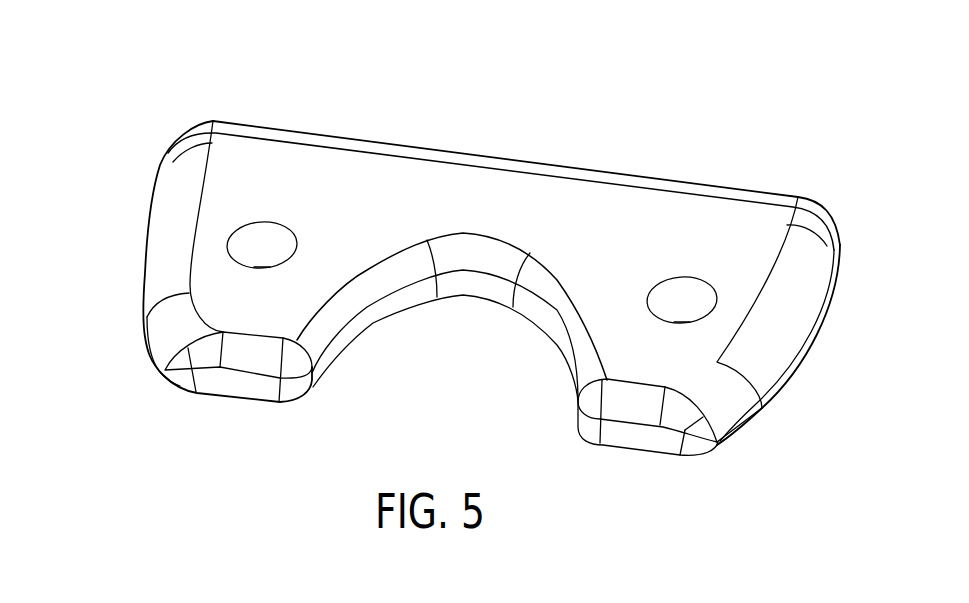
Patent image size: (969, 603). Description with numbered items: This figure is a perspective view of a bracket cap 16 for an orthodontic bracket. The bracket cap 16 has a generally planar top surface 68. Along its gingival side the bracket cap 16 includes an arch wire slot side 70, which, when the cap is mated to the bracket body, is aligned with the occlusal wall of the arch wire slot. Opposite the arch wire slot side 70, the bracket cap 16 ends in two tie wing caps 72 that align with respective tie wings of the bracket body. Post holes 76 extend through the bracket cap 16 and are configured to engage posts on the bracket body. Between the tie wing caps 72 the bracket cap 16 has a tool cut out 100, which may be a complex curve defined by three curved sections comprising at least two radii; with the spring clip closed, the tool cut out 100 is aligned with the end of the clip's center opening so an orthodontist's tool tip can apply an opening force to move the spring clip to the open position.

The bracket cap 16 is at (447, 270).
The top surface 68 is at (343, 214).
The arch wire slot side 70 is at (512, 158).
The tie wing caps 72 is at (240, 308).
The post holes 76 is at (264, 243).
The tool cut out 100 is at (469, 329).